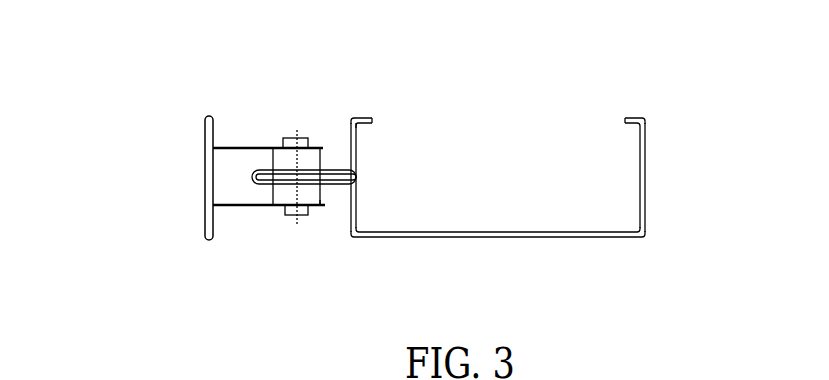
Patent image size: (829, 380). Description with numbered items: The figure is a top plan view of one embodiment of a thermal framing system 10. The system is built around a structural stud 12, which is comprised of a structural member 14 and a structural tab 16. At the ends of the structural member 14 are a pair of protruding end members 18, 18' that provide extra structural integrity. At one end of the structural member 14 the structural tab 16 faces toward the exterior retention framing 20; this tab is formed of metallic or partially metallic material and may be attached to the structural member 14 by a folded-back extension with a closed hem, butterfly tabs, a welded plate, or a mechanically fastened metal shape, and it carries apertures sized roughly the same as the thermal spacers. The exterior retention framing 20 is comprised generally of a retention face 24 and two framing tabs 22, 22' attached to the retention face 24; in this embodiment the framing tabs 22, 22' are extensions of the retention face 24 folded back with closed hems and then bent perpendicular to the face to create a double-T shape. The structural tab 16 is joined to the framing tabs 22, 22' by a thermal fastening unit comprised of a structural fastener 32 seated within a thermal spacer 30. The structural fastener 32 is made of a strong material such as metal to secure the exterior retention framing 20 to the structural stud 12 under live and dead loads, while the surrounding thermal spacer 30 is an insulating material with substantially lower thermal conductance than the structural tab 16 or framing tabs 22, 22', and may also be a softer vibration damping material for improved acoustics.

The thermal framing system 10 is at (542, 127).
The structural stud 12 is at (567, 95).
The structural member 14 is at (498, 225).
The structural tab 16 is at (332, 168).
The protruding end member 18 is at (371, 73).
The protruding end member 18' is at (646, 73).
The exterior retention framing 20 is at (185, 129).
The framing tab 22 is at (280, 121).
The framing tab 22' is at (323, 250).
The retention face 24 is at (203, 169).
The thermal spacer 30 is at (272, 193).
The structural fastener 32 is at (283, 217).